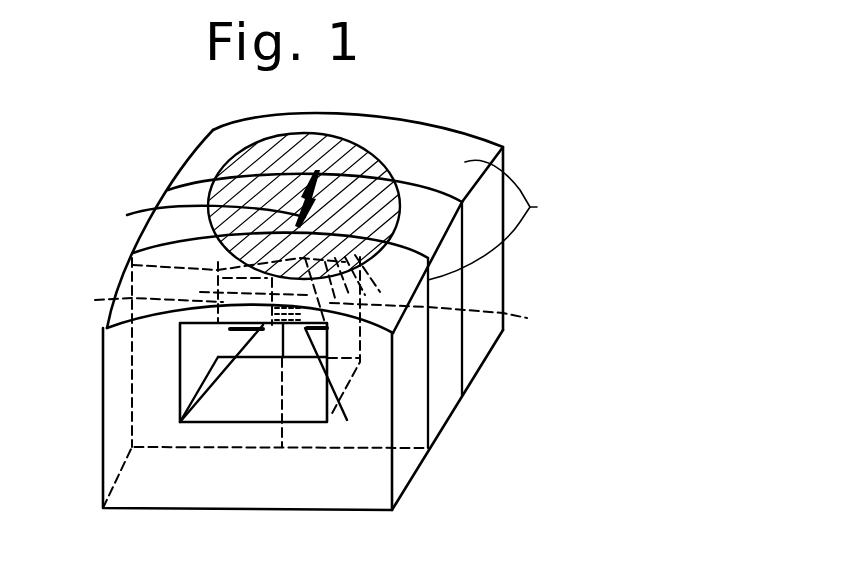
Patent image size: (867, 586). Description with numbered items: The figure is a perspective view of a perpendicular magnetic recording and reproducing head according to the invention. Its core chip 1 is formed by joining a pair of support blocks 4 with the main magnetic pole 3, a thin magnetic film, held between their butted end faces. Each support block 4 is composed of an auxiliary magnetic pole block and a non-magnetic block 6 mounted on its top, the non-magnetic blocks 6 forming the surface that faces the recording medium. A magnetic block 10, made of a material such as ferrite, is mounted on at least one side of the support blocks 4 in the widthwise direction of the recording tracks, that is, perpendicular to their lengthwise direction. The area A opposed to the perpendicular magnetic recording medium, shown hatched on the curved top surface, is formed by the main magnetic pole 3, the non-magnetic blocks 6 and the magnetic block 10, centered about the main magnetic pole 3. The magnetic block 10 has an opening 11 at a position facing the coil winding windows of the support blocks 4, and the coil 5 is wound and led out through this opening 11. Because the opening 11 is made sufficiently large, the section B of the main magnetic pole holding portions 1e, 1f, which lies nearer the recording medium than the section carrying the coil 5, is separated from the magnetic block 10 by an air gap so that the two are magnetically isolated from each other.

The core chip 1 is at (585, 282).
The main magnetic pole 3 is at (202, 212).
The support block 4 is at (443, 377).
The coil 5 is at (180, 422).
The non-magnetic block 6 is at (425, 200).
The magnetic block 10 is at (341, 221).
The opening 11 is at (270, 410).
The main magnetic pole holding portion 1e is at (145, 300).
The main magnetic pole holding portion 1f is at (446, 318).
The area opposed to the perpendicular magnetic recording medium A is at (223, 162).
The section of the main magnetic pole holding portions B is at (133, 265).